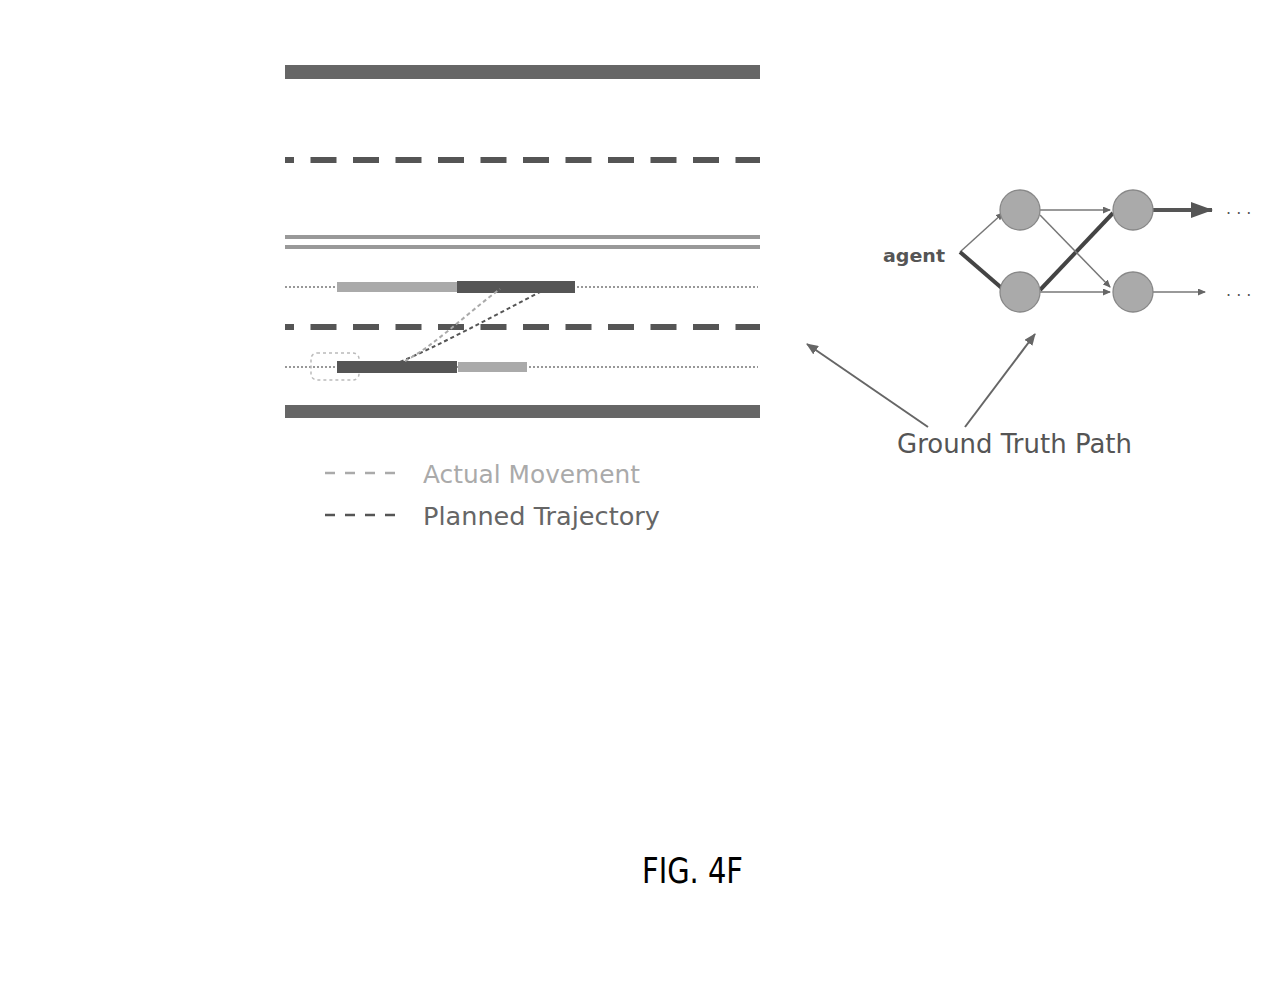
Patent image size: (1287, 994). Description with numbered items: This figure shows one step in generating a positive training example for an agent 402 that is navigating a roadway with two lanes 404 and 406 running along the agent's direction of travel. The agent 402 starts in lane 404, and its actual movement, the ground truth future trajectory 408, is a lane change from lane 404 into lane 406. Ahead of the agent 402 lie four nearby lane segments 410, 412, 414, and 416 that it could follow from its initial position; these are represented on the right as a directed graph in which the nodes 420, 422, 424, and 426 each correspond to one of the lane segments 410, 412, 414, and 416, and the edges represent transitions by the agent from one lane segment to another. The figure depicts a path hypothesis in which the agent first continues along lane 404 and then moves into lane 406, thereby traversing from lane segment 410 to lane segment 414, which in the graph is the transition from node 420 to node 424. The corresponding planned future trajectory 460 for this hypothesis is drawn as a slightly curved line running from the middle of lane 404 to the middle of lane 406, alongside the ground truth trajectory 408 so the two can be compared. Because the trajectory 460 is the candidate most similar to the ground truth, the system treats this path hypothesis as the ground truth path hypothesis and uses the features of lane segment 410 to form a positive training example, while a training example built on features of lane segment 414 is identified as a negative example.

The agent 402 is at (311, 376).
The lane 404 is at (285, 367).
The lane 406 is at (278, 284).
The ground truth future trajectory 408 is at (476, 308).
The lane segment 410 is at (412, 370).
The lane segment 412 is at (525, 370).
The lane segment 414 is at (422, 276).
The lane segment 416 is at (505, 276).
The node 420 is at (1021, 314).
The node 422 is at (1133, 314).
The node 424 is at (1030, 181).
The node 426 is at (1143, 181).
The planned future trajectory 460 is at (474, 327).